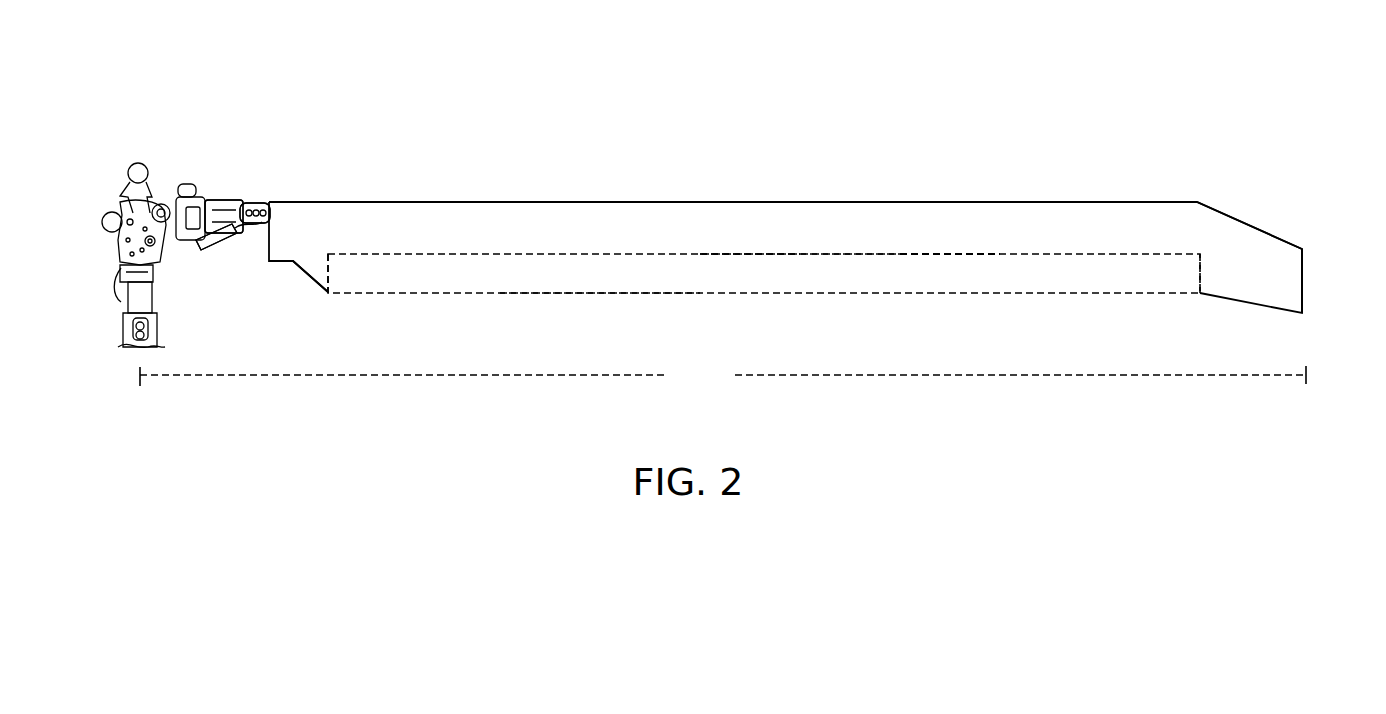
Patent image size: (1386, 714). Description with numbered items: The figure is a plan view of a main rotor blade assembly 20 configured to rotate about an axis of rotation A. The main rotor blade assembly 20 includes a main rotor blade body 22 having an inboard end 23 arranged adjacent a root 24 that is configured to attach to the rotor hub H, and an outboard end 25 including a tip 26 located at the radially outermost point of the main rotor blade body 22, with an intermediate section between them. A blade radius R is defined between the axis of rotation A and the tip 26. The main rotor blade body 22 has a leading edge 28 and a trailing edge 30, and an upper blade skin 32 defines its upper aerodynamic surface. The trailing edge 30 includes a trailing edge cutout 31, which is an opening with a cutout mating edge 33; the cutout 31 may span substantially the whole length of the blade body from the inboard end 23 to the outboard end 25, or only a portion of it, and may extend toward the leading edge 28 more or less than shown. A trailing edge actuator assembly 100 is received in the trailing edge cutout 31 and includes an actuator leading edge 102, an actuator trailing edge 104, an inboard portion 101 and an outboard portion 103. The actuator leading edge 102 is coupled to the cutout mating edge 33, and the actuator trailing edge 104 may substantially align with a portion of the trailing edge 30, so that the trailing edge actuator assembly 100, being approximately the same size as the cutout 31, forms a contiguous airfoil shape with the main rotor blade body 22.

The main rotor blade assembly 20 is at (998, 67).
The main rotor blade body 22 is at (731, 201).
The inboard end 23 is at (300, 176).
The root 24 is at (248, 204).
The outboard end 25 is at (1283, 212).
The tip 26 is at (1302, 249).
The leading edge 28 is at (530, 201).
The trailing edge 30 is at (306, 274).
The trailing edge cutout 31 is at (934, 242).
The upper blade skin 32 is at (358, 213).
The cutout mating edge 33 is at (742, 255).
The trailing edge actuator assembly 100 is at (523, 280).
The inboard portion 101 is at (355, 309).
The actuator leading edge 102 is at (792, 255).
The outboard portion 103 is at (1178, 300).
The actuator trailing edge 104 is at (595, 293).
The axis of rotation A is at (143, 210).
The rotor hub H is at (167, 176).
The blade radius R is at (723, 376).